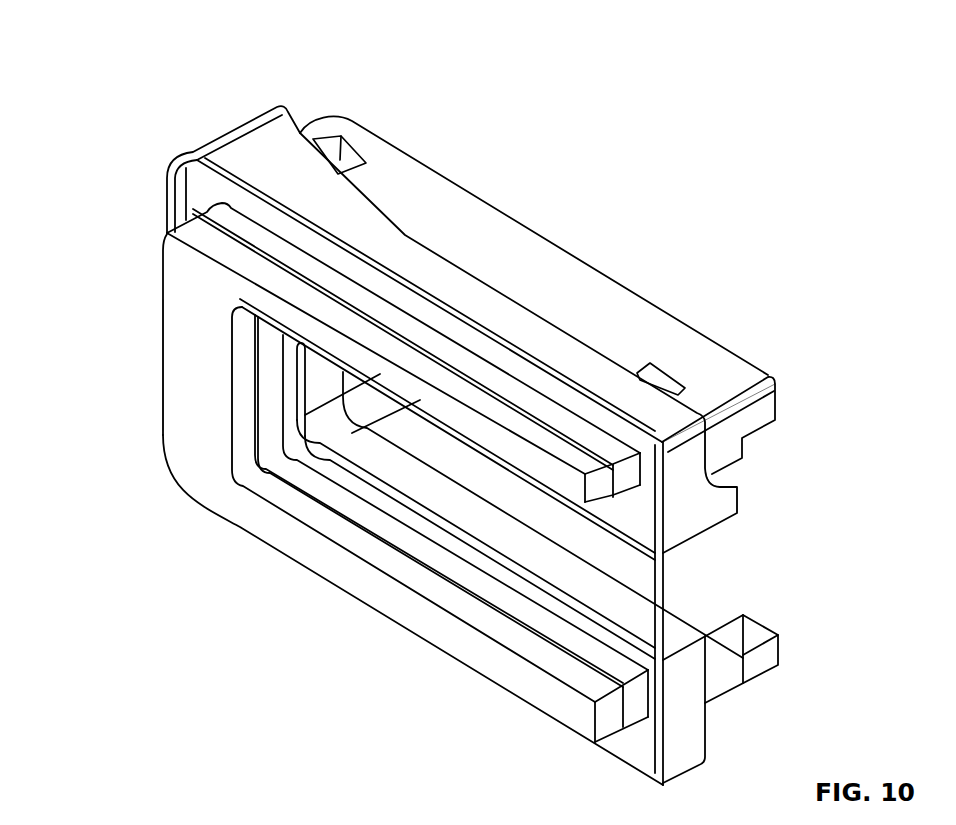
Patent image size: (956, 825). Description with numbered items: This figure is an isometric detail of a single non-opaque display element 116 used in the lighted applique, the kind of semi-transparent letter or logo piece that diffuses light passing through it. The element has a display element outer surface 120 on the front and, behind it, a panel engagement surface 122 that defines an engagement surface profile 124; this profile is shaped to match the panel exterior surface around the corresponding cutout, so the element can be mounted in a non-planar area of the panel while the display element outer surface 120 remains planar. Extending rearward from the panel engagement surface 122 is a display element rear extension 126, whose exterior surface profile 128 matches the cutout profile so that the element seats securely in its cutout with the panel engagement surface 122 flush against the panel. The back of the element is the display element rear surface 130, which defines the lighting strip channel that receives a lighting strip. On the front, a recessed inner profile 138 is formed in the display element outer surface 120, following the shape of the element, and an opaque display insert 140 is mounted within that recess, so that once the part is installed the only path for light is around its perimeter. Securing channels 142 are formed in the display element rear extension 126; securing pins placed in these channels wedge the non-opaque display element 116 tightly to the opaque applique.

The non-opaque display element 116 is at (173, 58).
The display element outer surface 120 is at (270, 605).
The panel engagement surface 122 is at (472, 274).
The engagement surface profile 124 is at (406, 226).
The display element rear extension 126 is at (750, 420).
The exterior surface profile 128 is at (557, 298).
The display element rear surface 130 is at (732, 342).
The recessed inner profile 138 is at (197, 367).
The opaque display insert 140 is at (200, 325).
The securing channel 142 is at (340, 137).